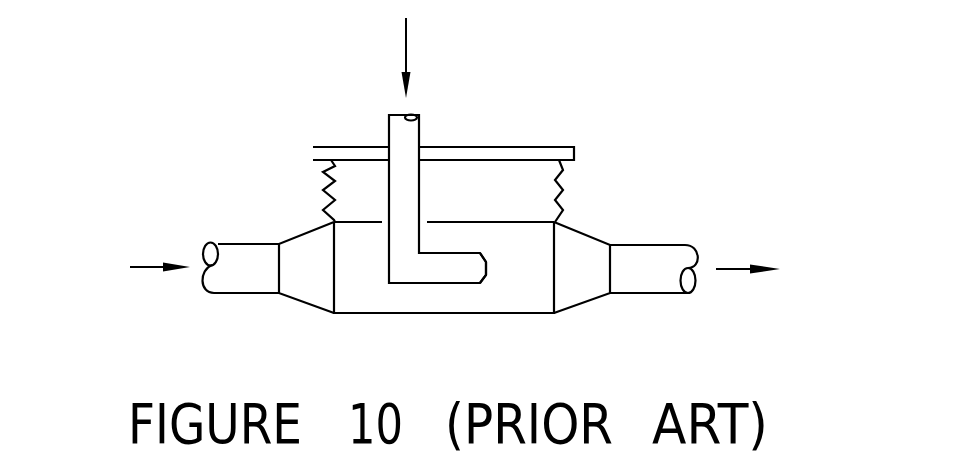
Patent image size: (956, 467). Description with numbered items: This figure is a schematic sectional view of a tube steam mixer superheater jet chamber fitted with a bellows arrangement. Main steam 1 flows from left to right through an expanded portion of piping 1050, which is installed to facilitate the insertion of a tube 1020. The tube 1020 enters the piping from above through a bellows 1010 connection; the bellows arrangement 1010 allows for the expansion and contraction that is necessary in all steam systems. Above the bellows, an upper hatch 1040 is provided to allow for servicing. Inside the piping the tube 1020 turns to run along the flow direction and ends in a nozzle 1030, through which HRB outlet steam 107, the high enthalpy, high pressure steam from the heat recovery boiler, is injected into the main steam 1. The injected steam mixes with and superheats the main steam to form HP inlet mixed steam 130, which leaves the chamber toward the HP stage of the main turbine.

The main steam 1 is at (152, 265).
The HRB outlet steam 107 is at (406, 38).
The HP inlet mixed steam 130 is at (732, 268).
The bellows 1010 is at (322, 190).
The tube 1020 is at (390, 125).
The nozzle 1030 is at (487, 275).
The upper hatch 1040 is at (525, 147).
The expanded portion of piping 1050 is at (401, 314).